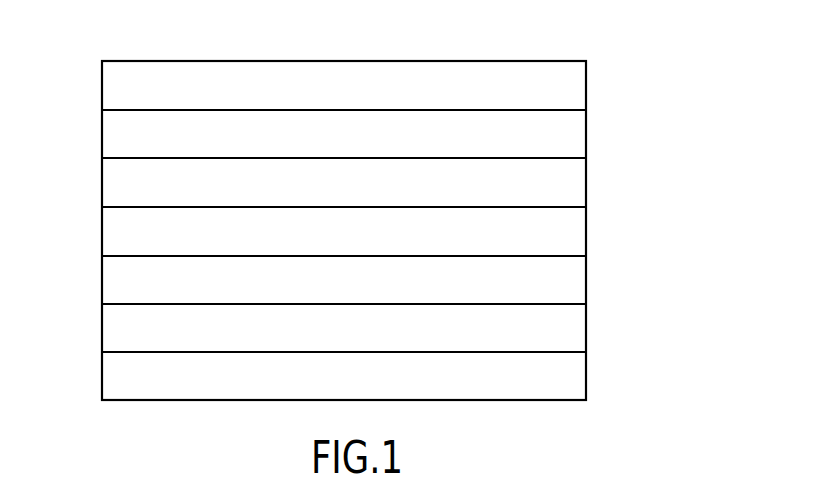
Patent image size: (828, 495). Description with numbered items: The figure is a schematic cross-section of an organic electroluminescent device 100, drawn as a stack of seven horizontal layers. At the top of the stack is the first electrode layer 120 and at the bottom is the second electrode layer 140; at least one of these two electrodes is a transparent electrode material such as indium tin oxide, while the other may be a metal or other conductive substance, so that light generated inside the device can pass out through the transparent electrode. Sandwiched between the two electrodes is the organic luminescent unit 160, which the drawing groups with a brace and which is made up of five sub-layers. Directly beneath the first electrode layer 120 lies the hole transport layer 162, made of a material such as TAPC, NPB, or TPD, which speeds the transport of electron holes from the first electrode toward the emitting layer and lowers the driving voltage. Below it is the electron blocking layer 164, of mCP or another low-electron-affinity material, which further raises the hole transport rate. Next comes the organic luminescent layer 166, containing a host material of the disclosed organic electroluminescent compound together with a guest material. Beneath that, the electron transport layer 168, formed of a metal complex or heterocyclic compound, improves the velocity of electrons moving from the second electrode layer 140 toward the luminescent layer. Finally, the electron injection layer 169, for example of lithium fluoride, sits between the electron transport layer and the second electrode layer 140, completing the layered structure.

The organic electroluminescent device 100 is at (130, 48).
The first electrode layer 120 is at (575, 92).
The second electrode layer 140 is at (575, 385).
The organic luminescent unit 160 is at (680, 122).
The hole transport layer 162 is at (575, 140).
The electron blocking layer 164 is at (575, 188).
The organic luminescent layer 166 is at (575, 237).
The electron transport layer 168 is at (575, 285).
The electron injection layer 169 is at (575, 333).